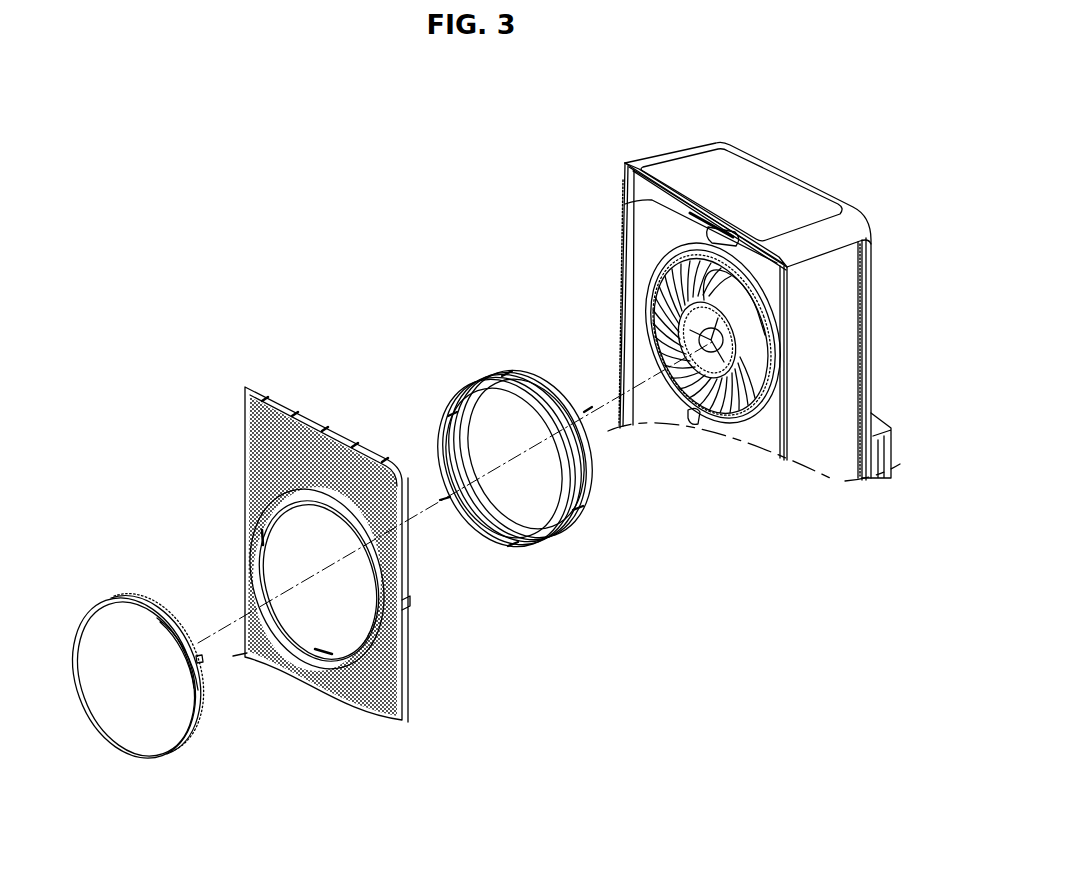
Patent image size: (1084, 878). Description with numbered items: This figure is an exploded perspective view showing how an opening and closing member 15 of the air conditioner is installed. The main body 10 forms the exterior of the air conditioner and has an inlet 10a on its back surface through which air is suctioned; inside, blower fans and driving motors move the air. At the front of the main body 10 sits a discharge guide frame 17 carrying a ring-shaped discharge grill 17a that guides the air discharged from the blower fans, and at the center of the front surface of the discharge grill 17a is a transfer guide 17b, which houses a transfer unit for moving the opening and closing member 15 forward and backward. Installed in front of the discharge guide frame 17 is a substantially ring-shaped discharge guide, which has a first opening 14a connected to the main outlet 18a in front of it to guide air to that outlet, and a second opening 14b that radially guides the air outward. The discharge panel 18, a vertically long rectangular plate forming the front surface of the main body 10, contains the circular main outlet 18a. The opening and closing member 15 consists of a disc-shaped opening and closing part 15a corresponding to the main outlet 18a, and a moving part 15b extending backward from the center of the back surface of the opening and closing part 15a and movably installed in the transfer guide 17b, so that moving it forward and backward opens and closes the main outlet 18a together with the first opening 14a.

The main body 10 is at (753, 291).
The inlet 10a is at (877, 343).
The first opening 14a is at (476, 516).
The second opening 14b is at (500, 382).
The opening and closing member 15 is at (133, 666).
The opening and closing part 15a is at (103, 626).
The moving part 15b is at (180, 642).
The discharge guide frame 17 is at (687, 349).
The discharge grill 17a is at (662, 276).
The transfer guide 17b is at (705, 297).
The discharge panel 18 is at (300, 554).
The main outlet 18a is at (305, 557).